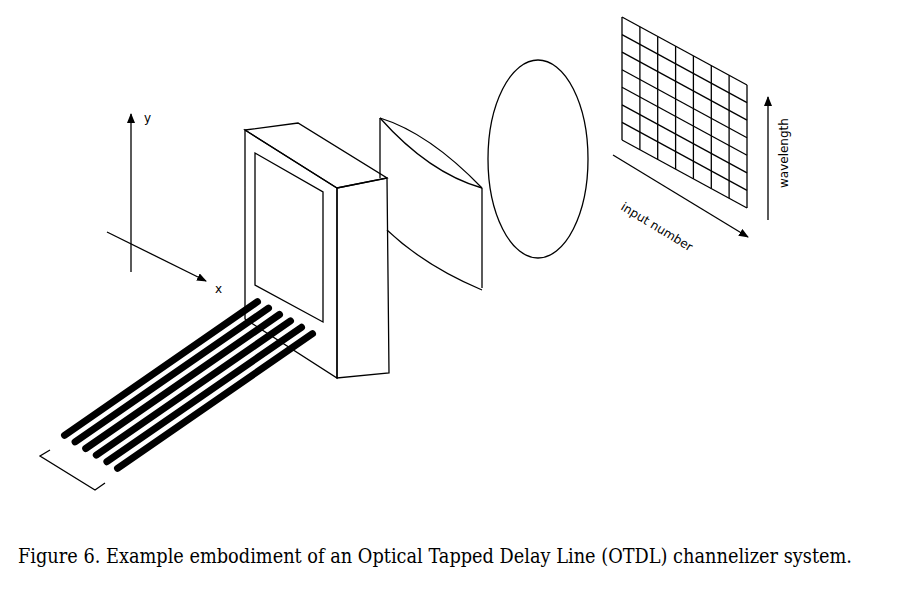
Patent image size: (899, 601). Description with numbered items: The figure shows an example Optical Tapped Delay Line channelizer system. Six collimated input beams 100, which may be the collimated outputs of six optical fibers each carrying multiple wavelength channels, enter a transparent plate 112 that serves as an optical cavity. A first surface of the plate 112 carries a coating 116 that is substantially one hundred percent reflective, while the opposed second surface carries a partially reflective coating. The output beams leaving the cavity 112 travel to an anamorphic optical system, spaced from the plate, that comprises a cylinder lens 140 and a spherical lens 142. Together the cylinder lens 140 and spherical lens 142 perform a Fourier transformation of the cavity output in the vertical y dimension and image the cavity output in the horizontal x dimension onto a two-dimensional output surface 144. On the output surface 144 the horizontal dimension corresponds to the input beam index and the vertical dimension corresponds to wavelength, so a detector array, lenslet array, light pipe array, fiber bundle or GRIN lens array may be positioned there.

The collimated input beams 100 is at (176, 397).
The transparent plate 112 is at (317, 250).
The coating 116 is at (289, 237).
The cylinder lens 140 is at (431, 204).
The spherical lens 142 is at (538, 159).
The output surface 144 is at (684, 112).